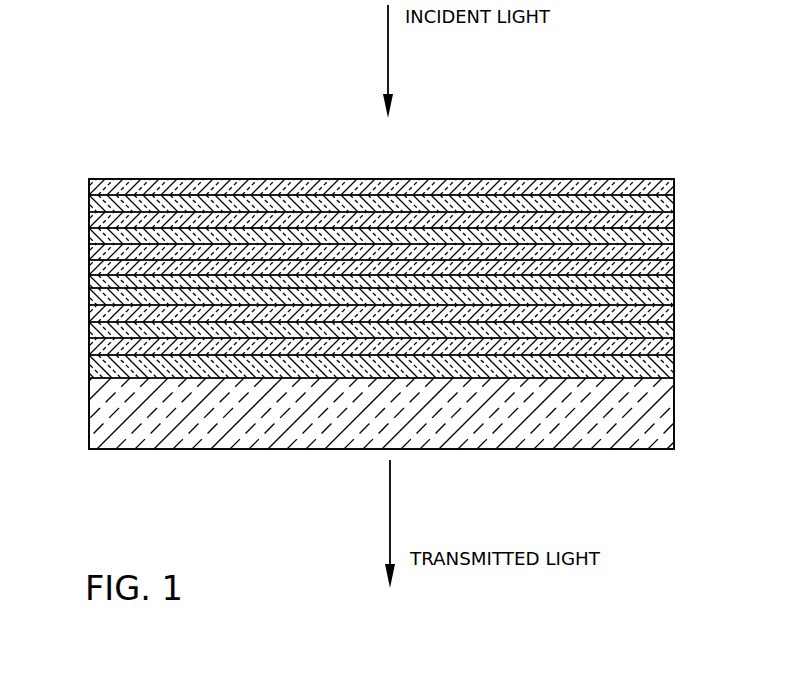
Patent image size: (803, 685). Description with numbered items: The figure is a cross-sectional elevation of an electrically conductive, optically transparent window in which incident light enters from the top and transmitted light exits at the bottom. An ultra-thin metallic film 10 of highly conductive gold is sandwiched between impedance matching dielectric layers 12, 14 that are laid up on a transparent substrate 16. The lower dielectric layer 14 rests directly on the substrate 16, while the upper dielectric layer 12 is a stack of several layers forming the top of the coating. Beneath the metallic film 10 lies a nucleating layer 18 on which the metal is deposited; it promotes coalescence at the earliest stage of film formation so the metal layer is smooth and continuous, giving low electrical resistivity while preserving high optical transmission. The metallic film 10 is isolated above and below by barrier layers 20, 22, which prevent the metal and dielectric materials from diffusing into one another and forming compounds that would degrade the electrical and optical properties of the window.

The metallic film 10 is at (674, 268).
The impedance matching dielectric layer 12 is at (83, 181).
The impedance matching dielectric layer 14 is at (83, 303).
The transparent substrate 16 is at (674, 412).
The nucleating layer 18 is at (88, 283).
The barrier layer 20 is at (674, 252).
The barrier layer 22 is at (674, 298).